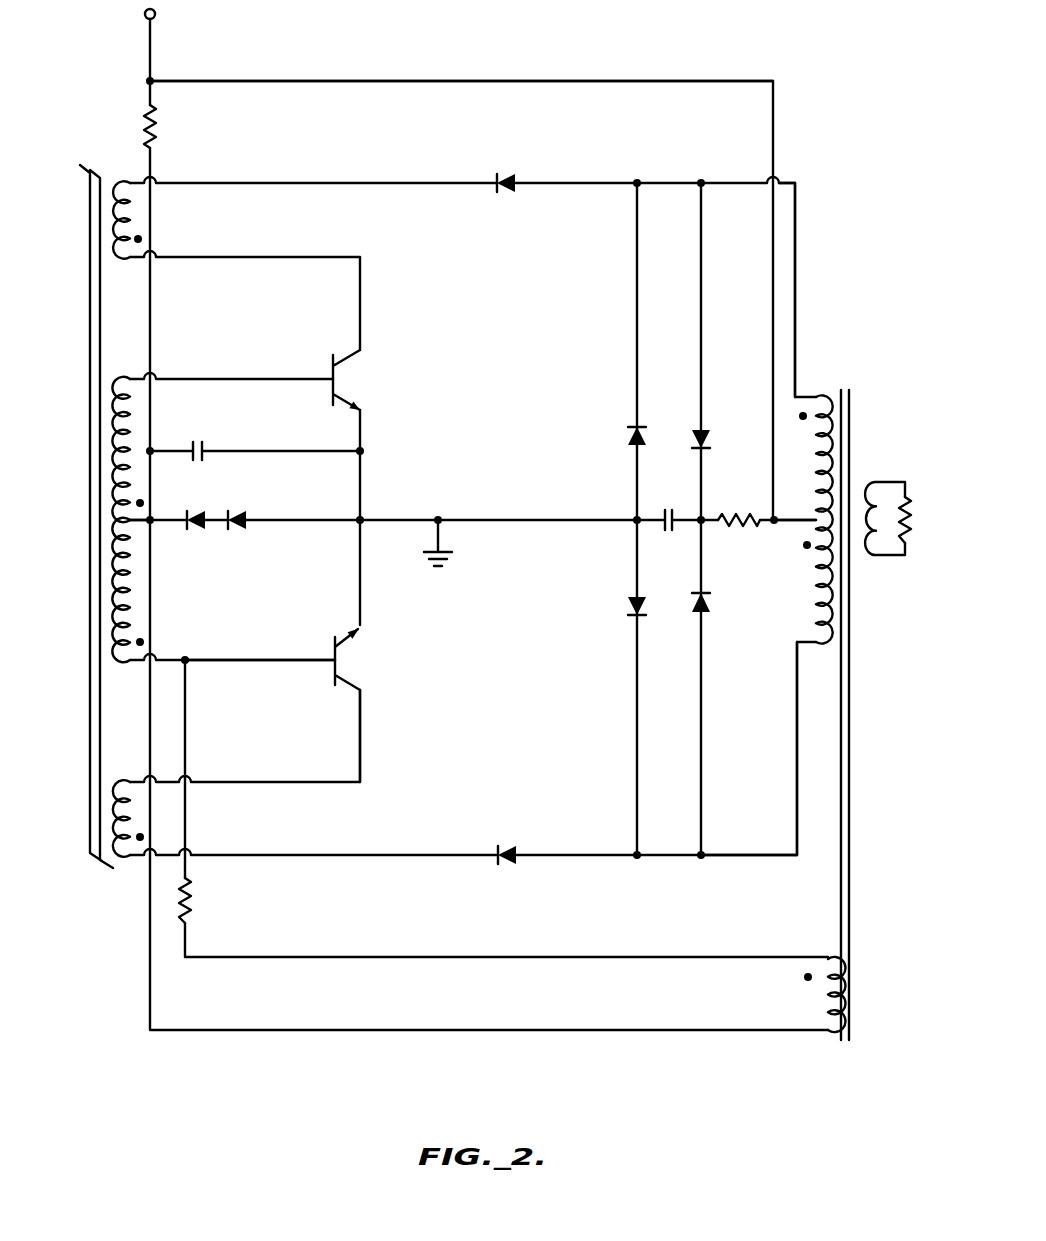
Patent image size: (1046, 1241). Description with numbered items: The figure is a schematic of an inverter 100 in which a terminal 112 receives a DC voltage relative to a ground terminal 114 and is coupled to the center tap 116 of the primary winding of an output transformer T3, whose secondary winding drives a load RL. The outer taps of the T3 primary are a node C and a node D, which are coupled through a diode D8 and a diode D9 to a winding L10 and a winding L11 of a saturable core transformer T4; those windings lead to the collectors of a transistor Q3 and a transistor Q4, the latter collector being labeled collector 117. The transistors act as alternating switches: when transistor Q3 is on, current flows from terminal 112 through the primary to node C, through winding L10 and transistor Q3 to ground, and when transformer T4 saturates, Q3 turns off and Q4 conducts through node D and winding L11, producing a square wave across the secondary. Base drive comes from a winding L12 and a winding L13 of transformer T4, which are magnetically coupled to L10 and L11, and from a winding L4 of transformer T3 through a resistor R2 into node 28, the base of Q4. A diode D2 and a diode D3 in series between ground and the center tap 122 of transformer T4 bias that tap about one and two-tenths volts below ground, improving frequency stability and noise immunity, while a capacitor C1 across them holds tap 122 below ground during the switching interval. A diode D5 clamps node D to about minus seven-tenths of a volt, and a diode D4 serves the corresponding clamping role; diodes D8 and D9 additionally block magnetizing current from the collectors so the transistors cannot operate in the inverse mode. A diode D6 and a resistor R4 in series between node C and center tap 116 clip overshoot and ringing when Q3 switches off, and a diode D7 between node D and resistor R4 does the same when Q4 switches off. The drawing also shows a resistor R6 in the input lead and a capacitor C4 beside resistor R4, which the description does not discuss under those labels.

The inverter 100 is at (507, 52).
The terminal 112 is at (173, 29).
The resistor R6 is at (171, 126).
The diode D8 is at (524, 166).
The node C is at (811, 282).
The saturable core transformer T4 is at (76, 516).
The winding L10 is at (91, 220).
The winding L12 is at (94, 449).
The center tap 122 is at (96, 506).
The winding L13 is at (94, 590).
The winding L11 is at (93, 818).
The resistor R2 is at (206, 900).
The transistor Q3 is at (367, 380).
The capacitor C1 is at (211, 439).
The diode D2 is at (208, 503).
The diode D3 is at (260, 503).
The ground terminal 114 is at (461, 543).
The diode D4 is at (655, 419).
The diode D6 is at (720, 421).
The capacitor C4 is at (675, 502).
The resistor R4 is at (741, 500).
The center tap 116 is at (793, 539).
The diode D5 is at (655, 588).
The diode D7 is at (722, 586).
The output transformer T3 is at (854, 715).
The load RL is at (907, 518).
The transistor Q4 is at (370, 660).
The node 28 is at (260, 688).
The collector 117 is at (385, 736).
The diode D9 is at (524, 875).
The node D is at (755, 778).
The winding L4 is at (849, 994).